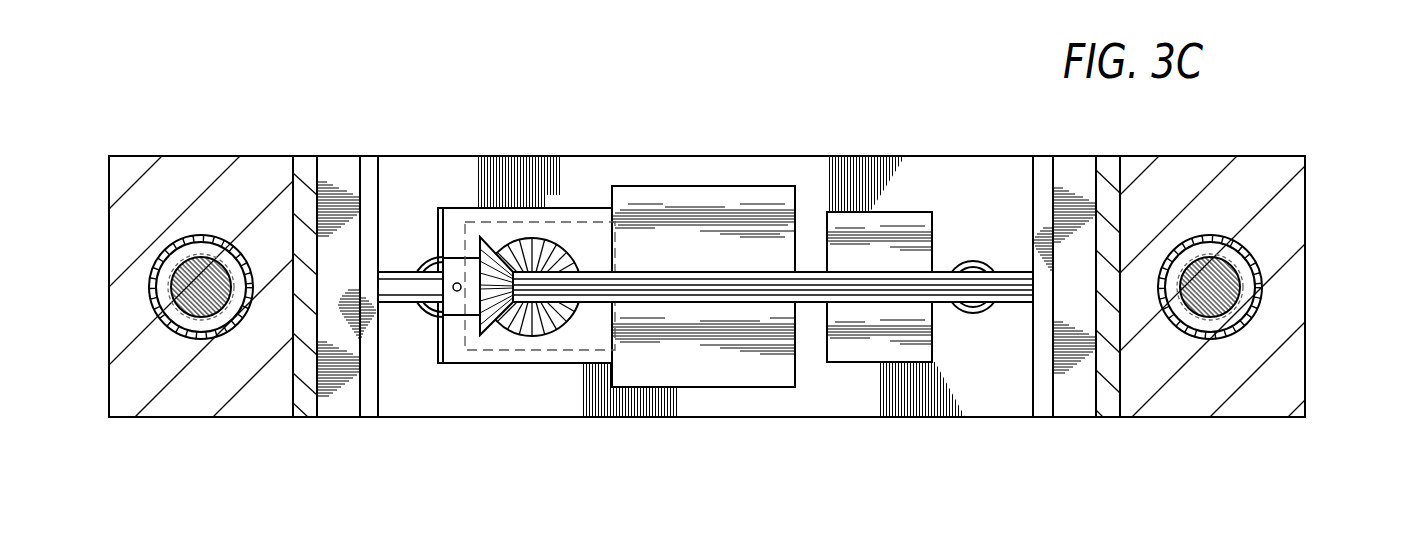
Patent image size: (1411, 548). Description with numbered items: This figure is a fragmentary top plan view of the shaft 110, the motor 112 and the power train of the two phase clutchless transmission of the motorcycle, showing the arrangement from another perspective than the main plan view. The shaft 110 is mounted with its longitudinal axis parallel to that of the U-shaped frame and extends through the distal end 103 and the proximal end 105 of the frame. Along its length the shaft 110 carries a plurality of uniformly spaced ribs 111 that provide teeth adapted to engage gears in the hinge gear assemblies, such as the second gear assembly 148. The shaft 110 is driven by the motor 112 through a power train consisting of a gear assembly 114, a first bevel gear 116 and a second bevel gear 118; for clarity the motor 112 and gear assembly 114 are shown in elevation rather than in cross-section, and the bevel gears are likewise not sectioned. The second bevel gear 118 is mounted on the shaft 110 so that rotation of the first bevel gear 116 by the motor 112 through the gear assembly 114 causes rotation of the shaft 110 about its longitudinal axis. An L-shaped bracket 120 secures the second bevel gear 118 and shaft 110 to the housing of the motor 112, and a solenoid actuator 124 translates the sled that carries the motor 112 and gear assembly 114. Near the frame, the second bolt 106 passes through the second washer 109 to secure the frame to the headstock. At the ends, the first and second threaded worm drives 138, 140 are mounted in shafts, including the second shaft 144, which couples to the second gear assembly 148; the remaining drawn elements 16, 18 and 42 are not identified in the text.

The sleeve 16 is at (175, 316).
The sleeve 18 is at (1247, 289).
The outer ring 42 is at (183, 238).
The distal end 103 is at (380, 187).
The proximal end 105 is at (1040, 382).
The second bolt 106 is at (987, 265).
The second washer 109 is at (953, 262).
The shaft 110 is at (702, 272).
The ribs 111 is at (745, 283).
The motor 112 is at (705, 368).
The gear assembly 114 is at (550, 352).
The first bevel gear 116 is at (536, 248).
The second bevel gear 118 is at (485, 327).
The L-shaped bracket 120 is at (442, 208).
The solenoid actuator 124 is at (845, 350).
The first threaded worm drive 138 is at (207, 300).
The second threaded worm drive 140 is at (1225, 295).
The second shaft 144 is at (1252, 252).
The second gear assembly 148 is at (1107, 393).